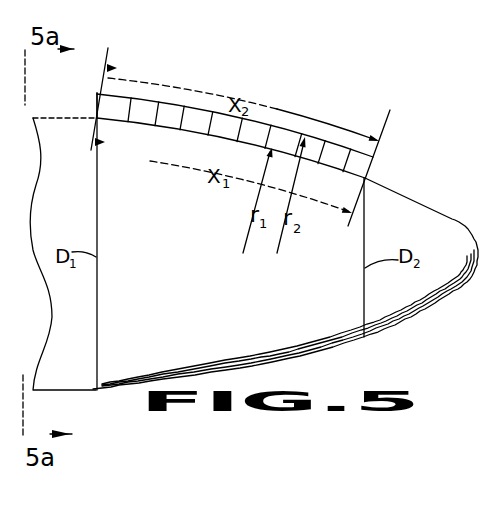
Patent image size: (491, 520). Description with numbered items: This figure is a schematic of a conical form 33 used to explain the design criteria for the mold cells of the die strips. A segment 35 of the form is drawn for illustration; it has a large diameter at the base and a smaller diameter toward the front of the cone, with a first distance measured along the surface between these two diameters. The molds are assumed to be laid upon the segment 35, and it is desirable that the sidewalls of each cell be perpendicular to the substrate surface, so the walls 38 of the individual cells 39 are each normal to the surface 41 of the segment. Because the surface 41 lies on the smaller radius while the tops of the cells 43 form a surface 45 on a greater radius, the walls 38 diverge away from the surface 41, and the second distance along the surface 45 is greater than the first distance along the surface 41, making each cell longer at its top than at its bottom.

The conical form 33 is at (86, 318).
The segment 35 is at (285, 283).
The walls 38 is at (97, 109).
The individual cells 39 is at (113, 101).
The surface 41 is at (322, 166).
The tops of the cells 43 is at (143, 98).
The surface 45 is at (255, 121).